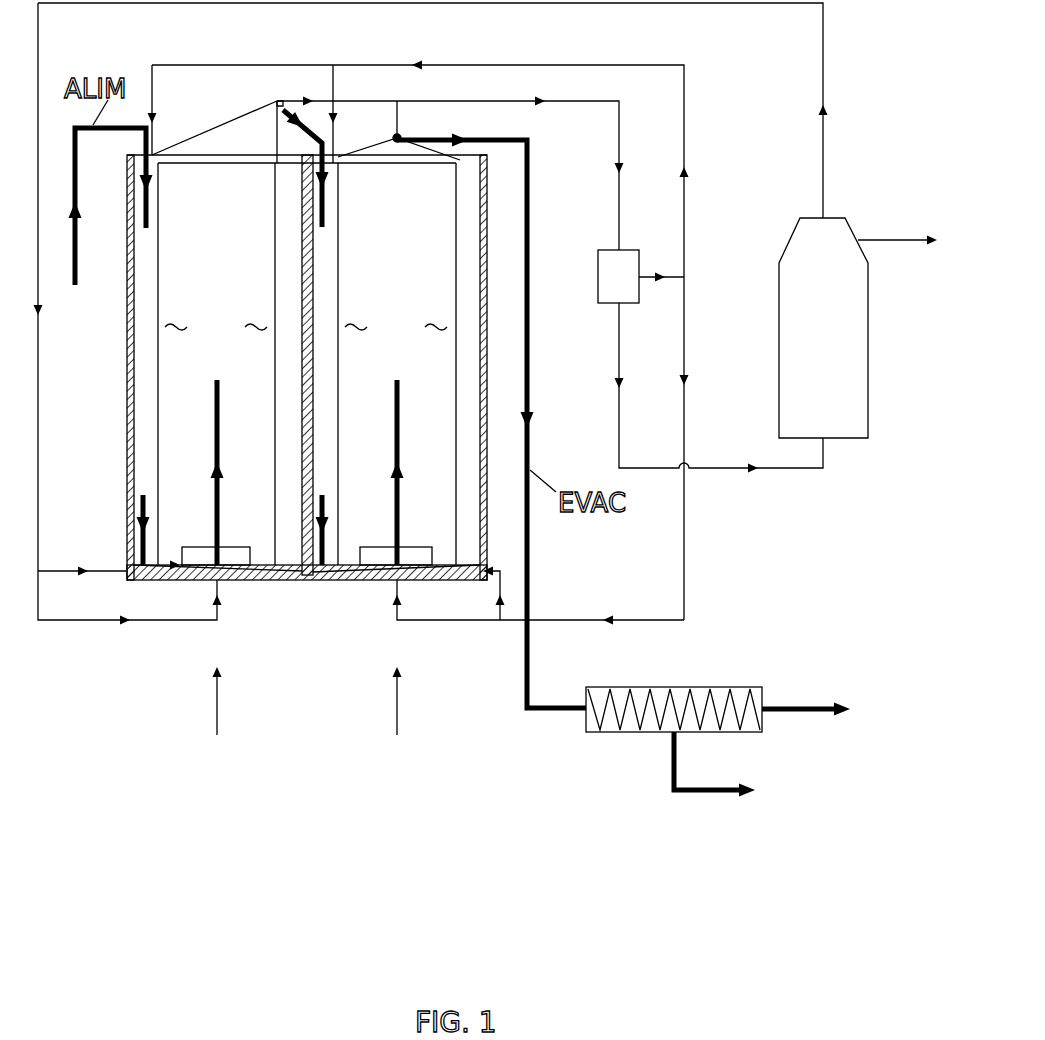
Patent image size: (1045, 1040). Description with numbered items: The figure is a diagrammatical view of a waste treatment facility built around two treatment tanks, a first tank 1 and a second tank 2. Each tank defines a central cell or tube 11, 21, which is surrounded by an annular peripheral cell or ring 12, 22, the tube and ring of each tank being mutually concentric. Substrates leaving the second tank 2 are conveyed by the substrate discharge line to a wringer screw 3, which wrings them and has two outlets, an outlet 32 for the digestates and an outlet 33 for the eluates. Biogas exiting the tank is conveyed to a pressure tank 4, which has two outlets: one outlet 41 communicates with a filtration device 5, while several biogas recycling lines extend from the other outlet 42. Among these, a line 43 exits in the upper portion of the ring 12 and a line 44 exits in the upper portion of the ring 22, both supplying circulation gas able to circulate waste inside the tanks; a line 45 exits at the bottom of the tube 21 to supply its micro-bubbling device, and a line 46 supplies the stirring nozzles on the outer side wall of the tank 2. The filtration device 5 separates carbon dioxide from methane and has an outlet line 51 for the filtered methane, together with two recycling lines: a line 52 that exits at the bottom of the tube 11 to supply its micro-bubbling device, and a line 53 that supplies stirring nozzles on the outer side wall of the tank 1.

The first tank 1 is at (206, 701).
The second tank 2 is at (388, 701).
The wringer screw 3 is at (700, 687).
The pressure tank 4 is at (618, 276).
The filtration device 5 is at (823, 328).
The tube 11 is at (216, 327).
The ring 12 is at (285, 272).
The tube 21 is at (396, 327).
The ring 22 is at (465, 272).
The digestate outlet 32 is at (825, 712).
The eluate outlet 33 is at (733, 771).
The outlet of pressure tank 41 is at (619, 350).
The outlet of pressure tank 42 is at (647, 272).
The circulation gas inlet line 43 is at (266, 63).
The circulation gas inlet line 44 is at (338, 85).
The line from pressure tank to second tank 45 is at (455, 622).
The line from pressure tank to second tank 46 is at (502, 568).
The outlet of filtration device 51 is at (905, 221).
The line from filtration device to first tank 52 is at (65, 622).
The line from filtration device to first tank 53 is at (65, 568).